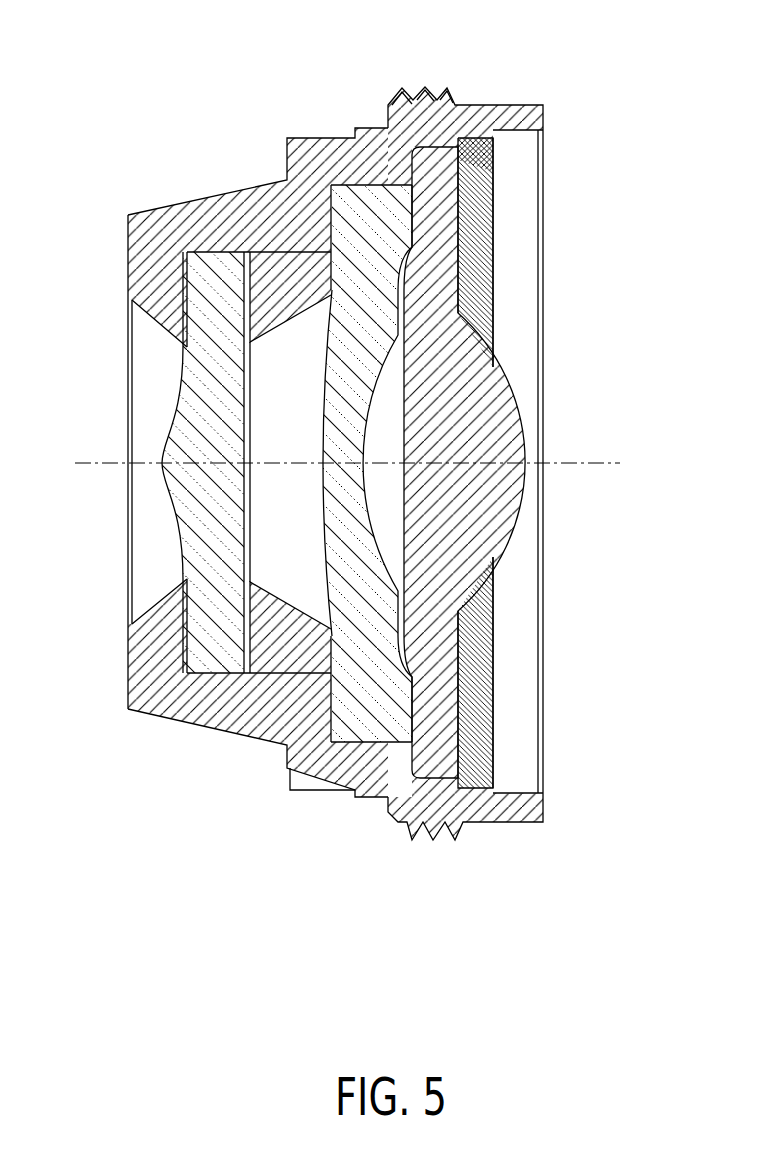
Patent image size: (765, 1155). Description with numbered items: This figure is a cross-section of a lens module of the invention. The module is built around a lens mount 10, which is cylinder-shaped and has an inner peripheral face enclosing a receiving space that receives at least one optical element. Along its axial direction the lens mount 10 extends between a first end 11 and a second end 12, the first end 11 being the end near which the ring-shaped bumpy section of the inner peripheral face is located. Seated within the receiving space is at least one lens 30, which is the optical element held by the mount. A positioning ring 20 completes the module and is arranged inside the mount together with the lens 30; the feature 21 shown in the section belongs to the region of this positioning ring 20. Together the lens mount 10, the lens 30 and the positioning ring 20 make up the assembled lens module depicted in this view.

The lens mount 10 is at (417, 90).
The first end 11 is at (540, 842).
The second end 12 is at (134, 739).
The positioning ring 20 is at (482, 104).
The inner surface of light-shielding element 21 is at (493, 287).
The lens 30 is at (497, 503).